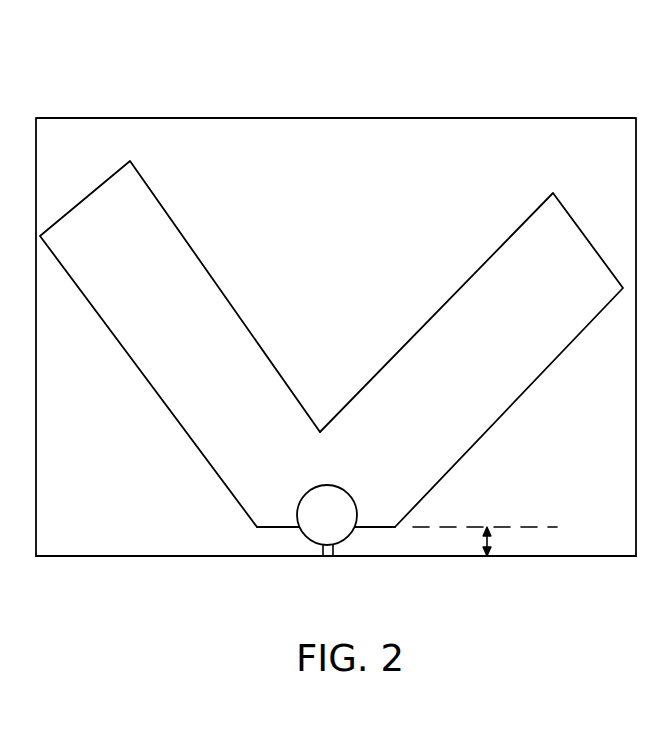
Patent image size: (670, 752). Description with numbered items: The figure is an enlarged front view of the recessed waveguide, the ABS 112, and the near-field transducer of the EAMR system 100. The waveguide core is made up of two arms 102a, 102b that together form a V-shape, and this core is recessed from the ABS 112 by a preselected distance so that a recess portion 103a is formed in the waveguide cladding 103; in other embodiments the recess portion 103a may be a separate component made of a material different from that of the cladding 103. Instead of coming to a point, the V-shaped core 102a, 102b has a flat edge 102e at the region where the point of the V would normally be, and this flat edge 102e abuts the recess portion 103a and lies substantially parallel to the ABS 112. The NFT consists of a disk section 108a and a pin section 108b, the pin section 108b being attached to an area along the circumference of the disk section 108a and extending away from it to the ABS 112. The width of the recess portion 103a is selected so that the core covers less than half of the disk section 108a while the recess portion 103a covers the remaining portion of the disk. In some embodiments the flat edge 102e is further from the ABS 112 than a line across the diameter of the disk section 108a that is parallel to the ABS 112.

The EAMR system 100 is at (496, 70).
The waveguide cladding 103 is at (613, 156).
The ABS 112 is at (135, 557).
The recess portion 103a is at (372, 543).
The waveguide core 102b is at (170, 245).
The waveguide core 102a is at (523, 247).
The flat edge 102e is at (268, 530).
The disk section 108a is at (325, 493).
The pin section 108b is at (327, 556).